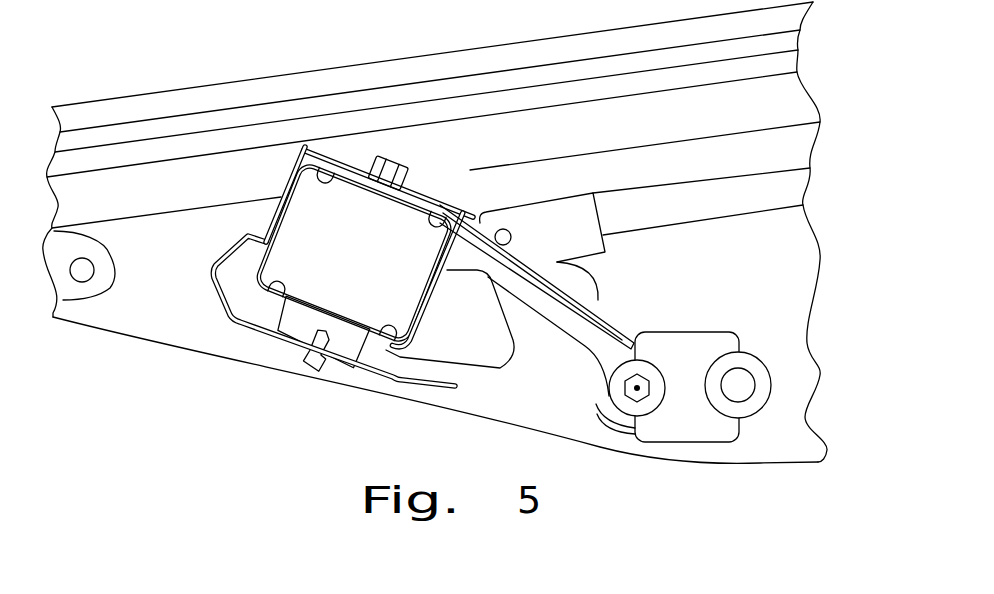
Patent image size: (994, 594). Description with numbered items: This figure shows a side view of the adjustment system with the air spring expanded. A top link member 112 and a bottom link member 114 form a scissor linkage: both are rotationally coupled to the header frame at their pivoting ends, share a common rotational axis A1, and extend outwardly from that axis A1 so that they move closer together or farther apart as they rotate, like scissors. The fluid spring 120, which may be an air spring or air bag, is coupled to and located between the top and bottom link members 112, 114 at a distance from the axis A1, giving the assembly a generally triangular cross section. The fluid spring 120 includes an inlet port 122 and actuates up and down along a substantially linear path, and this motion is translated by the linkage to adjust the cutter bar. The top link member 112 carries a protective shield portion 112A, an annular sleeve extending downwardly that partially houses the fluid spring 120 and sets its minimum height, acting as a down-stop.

The top link member 112 is at (344, 160).
The protective shield portion 112A is at (287, 182).
The bottom link member 114 is at (483, 383).
The fluid spring 120 is at (307, 258).
The inlet port 122 is at (400, 146).
The rotational axis A1 is at (638, 386).